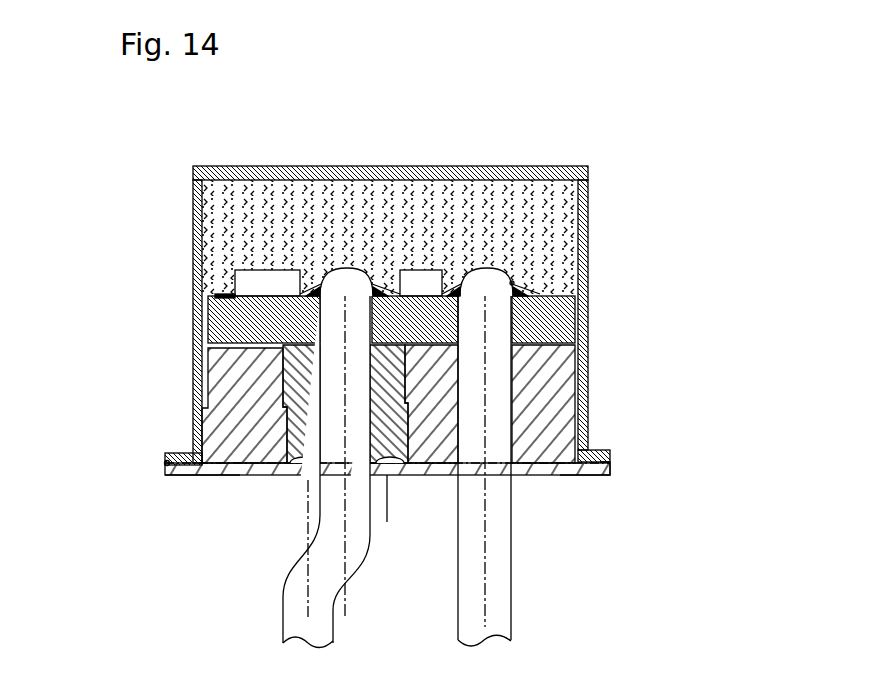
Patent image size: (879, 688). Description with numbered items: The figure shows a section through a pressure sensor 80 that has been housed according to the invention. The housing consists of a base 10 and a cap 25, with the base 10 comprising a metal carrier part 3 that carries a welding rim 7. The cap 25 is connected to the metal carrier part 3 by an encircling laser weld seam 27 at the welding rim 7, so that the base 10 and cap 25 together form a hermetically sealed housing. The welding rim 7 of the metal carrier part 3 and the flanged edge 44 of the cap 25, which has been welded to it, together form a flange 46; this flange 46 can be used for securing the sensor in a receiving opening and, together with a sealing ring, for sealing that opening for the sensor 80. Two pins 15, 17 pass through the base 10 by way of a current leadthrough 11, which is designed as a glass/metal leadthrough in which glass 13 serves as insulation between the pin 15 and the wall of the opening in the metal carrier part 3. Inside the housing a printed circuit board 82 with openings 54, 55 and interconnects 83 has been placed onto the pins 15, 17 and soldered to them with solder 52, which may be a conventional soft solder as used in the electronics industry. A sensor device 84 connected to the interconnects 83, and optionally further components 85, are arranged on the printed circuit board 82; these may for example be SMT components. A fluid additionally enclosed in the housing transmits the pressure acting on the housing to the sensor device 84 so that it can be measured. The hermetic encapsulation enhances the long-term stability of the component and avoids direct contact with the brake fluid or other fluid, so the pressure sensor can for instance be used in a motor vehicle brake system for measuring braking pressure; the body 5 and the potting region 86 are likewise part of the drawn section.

The sensor 80 is at (63, 174).
The metal carrier part 3 is at (582, 350).
The base body 5 is at (238, 408).
The welding rim 7 is at (583, 477).
The base 10 is at (405, 530).
The current leadthrough 11 is at (304, 479).
The glass 13 is at (210, 478).
The pin 15 is at (282, 609).
The pin 17 is at (512, 604).
The cap 25 is at (192, 373).
The laser weld seam 27 is at (610, 462).
The flanged edge 44 is at (607, 452).
The flange 46 is at (140, 453).
The solder 52 is at (517, 284).
The opening 54 is at (349, 282).
The opening 55 is at (497, 282).
The printed circuit board 82 is at (543, 322).
The interconnects 83 is at (210, 295).
The sensor device 84 is at (270, 280).
The further components 85 is at (410, 283).
The potting compound 86 is at (557, 200).